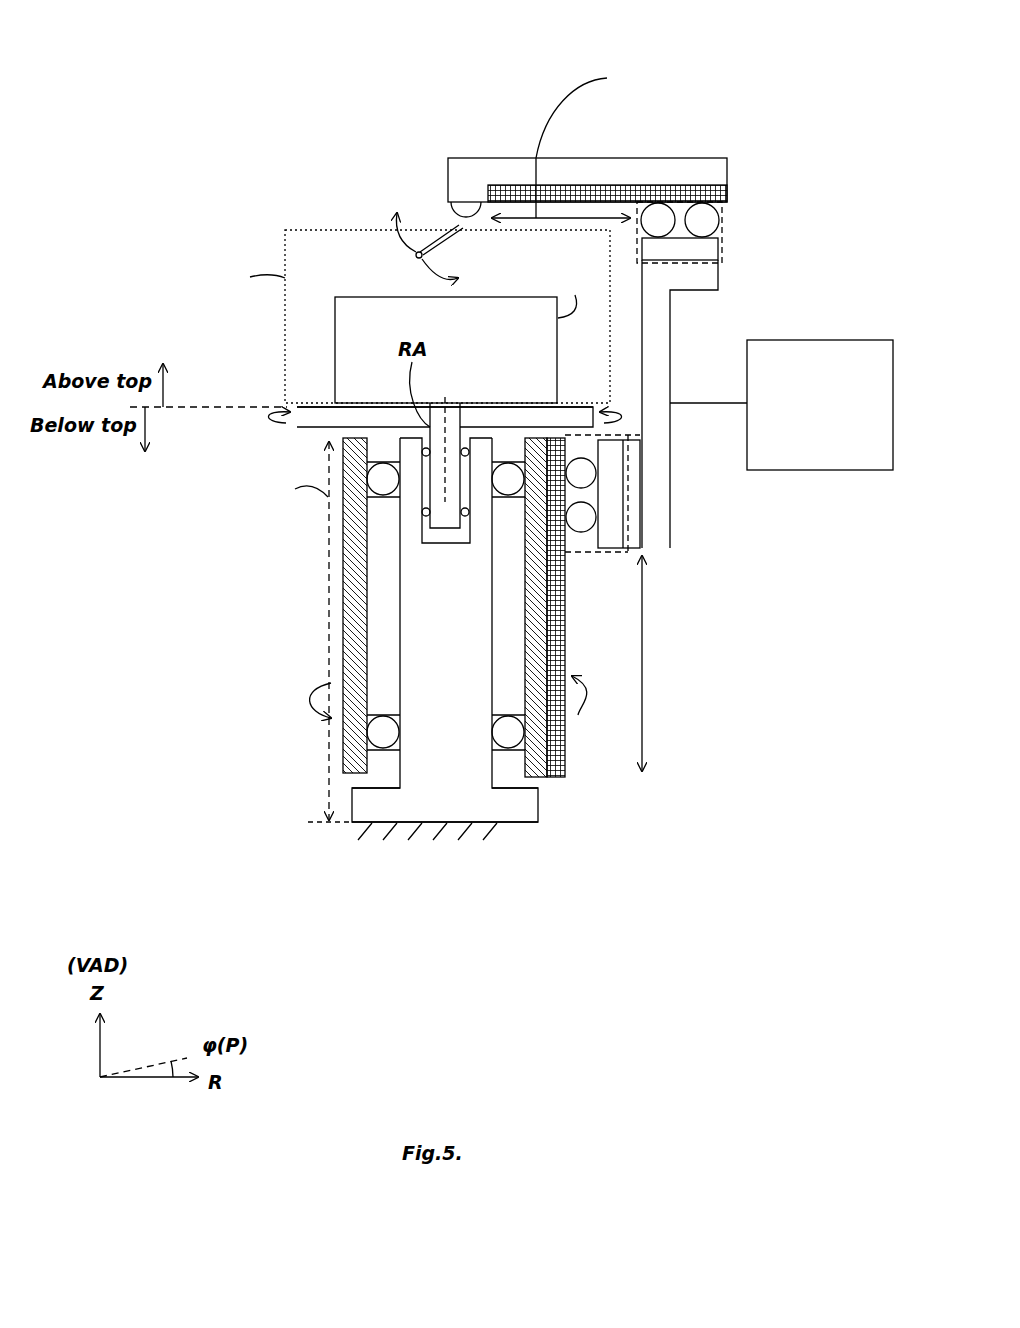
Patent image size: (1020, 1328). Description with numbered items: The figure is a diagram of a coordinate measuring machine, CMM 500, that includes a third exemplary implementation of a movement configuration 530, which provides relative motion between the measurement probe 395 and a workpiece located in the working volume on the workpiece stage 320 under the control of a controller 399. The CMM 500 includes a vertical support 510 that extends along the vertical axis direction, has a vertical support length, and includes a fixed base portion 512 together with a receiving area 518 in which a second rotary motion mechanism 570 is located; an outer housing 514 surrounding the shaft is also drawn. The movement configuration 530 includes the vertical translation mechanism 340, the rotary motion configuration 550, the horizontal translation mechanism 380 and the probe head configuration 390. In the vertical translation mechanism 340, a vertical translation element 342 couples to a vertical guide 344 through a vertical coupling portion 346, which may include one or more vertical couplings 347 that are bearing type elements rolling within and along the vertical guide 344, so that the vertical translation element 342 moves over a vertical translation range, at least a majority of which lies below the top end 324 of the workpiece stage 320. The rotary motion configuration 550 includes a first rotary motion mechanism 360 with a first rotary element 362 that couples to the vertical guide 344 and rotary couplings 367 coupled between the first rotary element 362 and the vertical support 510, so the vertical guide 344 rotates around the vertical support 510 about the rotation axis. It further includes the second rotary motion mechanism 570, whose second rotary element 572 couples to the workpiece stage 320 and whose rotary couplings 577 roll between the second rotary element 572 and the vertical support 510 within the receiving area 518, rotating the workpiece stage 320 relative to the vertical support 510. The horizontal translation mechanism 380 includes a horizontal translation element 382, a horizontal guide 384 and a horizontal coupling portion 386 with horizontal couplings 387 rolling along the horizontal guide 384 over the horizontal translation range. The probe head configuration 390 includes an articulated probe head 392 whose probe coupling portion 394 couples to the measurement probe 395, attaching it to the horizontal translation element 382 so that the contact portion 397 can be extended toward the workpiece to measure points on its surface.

The CMM 500 is at (749, 46).
The horizontal translation mechanism 380 is at (653, 306).
The horizontal translation element 382 is at (722, 168).
The horizontal guide 384 is at (722, 193).
The horizontal couplings 387 is at (705, 220).
The horizontal coupling portion 386 is at (724, 390).
The controller 399 is at (832, 340).
The probe head configuration 390 is at (382, 176).
The articulated probe head 392 is at (473, 226).
The probe coupling portion 394 is at (452, 218).
The measurement probe 395 is at (437, 243).
The contact portion 397 is at (417, 258).
The workpiece stage 320 is at (311, 427).
The top end 324 is at (326, 405).
The receiving area 518 is at (447, 417).
The housing 514 is at (482, 432).
The vertical support 510 is at (428, 610).
The second rotary motion mechanism 570 is at (331, 509).
The second rotary element 572 is at (437, 488).
The rotary couplings 577 is at (427, 515).
The vertical translation mechanism 340 is at (684, 606).
The vertical translation element 342 is at (657, 440).
The vertical coupling portion 346 is at (581, 534).
The vertical couplings 347 is at (624, 524).
The vertical guide 344 is at (563, 578).
The first rotary motion mechanism 360 is at (276, 638).
The first rotary element 362 is at (346, 763).
The rotary couplings 367 is at (360, 793).
The rotary motion configuration 550 is at (190, 513).
The fixed base portion 512 is at (502, 813).
The movement configuration 530 is at (684, 823).